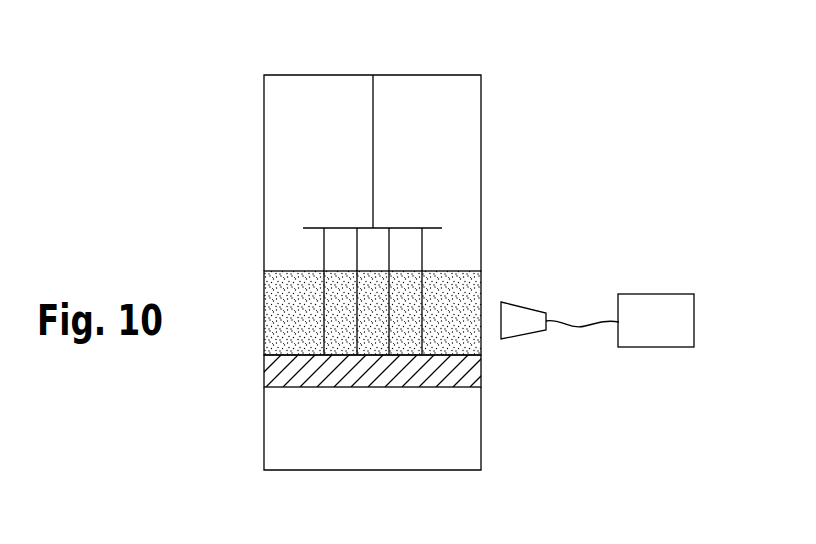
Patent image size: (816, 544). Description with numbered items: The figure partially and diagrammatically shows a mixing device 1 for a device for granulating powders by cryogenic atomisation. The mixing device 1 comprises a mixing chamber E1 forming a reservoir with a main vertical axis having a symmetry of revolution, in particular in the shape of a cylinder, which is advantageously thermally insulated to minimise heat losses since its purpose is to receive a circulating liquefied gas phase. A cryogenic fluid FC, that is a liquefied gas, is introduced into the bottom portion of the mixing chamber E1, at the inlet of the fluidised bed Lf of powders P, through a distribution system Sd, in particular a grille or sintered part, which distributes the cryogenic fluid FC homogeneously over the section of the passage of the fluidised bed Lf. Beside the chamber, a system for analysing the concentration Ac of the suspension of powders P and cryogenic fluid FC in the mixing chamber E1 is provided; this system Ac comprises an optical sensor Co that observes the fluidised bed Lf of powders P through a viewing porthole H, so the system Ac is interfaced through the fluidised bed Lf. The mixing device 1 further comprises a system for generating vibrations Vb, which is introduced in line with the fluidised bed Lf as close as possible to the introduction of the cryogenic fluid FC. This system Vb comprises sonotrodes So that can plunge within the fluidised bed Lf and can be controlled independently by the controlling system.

The mixing device 1 is at (207, 149).
The mixing chamber E1 is at (283, 200).
The system for generating vibrations Vb is at (373, 97).
The sonotrodes So is at (422, 252).
The powders P is at (272, 309).
The distribution system Sd is at (385, 387).
The cryogenic fluid FC is at (326, 438).
The fluidised bed Lf is at (481, 297).
The optical sensor Co is at (541, 308).
The system for analysing the concentration Ac is at (660, 315).
The viewing porthole H is at (497, 352).